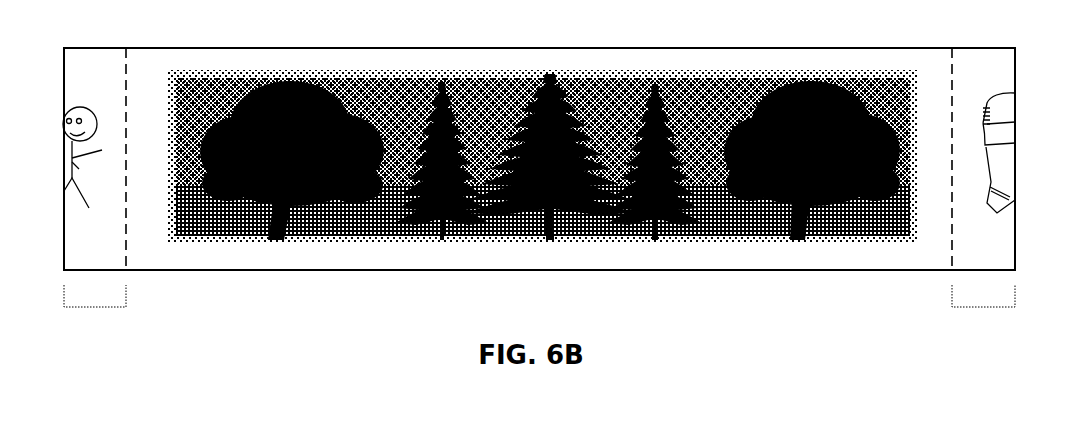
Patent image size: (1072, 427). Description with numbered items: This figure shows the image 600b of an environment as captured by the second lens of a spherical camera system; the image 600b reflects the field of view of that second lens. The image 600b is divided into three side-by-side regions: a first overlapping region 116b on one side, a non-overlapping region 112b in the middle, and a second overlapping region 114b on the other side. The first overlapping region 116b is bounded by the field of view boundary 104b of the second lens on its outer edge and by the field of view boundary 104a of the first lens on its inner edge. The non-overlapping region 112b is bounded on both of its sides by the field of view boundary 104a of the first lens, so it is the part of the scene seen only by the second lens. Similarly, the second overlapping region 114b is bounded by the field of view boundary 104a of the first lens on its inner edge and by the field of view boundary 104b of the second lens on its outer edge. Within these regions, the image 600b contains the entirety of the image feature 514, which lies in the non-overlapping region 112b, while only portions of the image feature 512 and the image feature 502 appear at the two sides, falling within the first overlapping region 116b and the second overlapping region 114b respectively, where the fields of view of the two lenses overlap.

The image 600b is at (503, 31).
The field of view boundary of the first lens 104a is at (126, 40).
The field of view boundary of the second lens 104b is at (66, 40).
The image feature 512 is at (97, 124).
The image feature 514 is at (918, 80).
The image feature 502 is at (1000, 215).
The non-overlapping region 112b is at (539, 287).
The first overlapping region 116b is at (95, 309).
The second overlapping region 114b is at (983, 309).